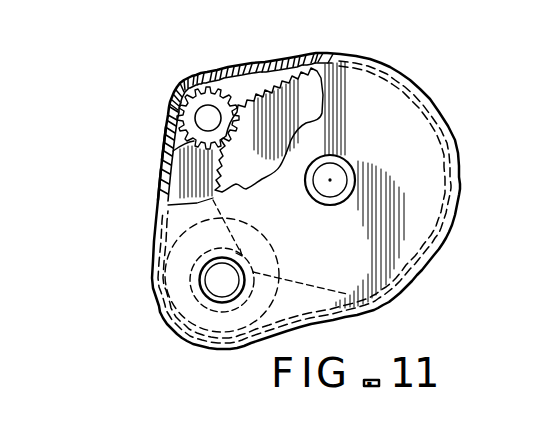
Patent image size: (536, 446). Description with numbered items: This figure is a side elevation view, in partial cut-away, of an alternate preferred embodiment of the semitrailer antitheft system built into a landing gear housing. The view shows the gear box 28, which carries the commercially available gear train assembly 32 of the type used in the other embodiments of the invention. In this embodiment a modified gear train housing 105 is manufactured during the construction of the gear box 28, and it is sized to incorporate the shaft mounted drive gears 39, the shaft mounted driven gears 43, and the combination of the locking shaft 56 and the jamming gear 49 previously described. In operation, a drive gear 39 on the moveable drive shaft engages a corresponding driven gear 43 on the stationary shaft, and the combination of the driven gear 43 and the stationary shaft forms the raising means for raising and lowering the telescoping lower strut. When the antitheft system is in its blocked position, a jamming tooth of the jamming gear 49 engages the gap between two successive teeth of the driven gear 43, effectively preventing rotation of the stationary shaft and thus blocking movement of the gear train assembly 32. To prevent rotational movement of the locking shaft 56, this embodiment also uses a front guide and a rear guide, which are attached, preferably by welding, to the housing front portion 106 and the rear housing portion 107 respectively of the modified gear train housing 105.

The gear box 28 is at (392, 311).
The gear train assembly 32 is at (324, 59).
The drive gear 39 is at (183, 230).
The driven gear 43 is at (392, 120).
The jamming gear 49 is at (179, 90).
The locking shaft 56 is at (163, 141).
The modified gear train housing 105 is at (163, 183).
The housing front portion 106 is at (425, 158).
The rear housing portion 107 is at (242, 188).